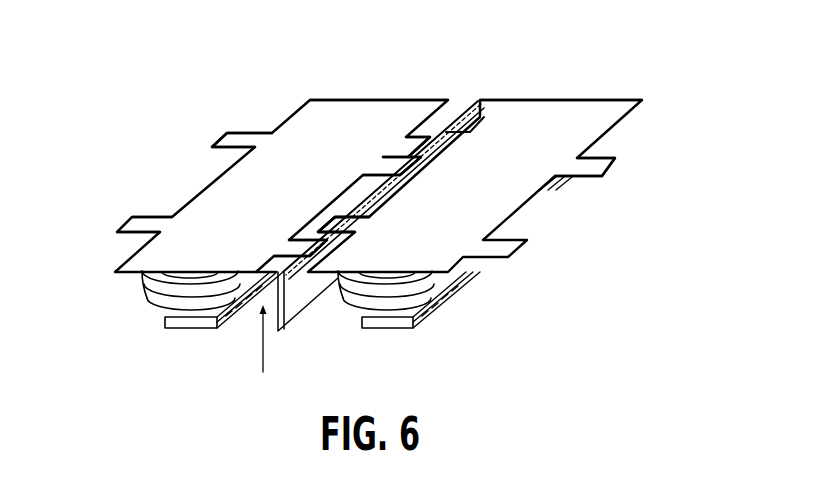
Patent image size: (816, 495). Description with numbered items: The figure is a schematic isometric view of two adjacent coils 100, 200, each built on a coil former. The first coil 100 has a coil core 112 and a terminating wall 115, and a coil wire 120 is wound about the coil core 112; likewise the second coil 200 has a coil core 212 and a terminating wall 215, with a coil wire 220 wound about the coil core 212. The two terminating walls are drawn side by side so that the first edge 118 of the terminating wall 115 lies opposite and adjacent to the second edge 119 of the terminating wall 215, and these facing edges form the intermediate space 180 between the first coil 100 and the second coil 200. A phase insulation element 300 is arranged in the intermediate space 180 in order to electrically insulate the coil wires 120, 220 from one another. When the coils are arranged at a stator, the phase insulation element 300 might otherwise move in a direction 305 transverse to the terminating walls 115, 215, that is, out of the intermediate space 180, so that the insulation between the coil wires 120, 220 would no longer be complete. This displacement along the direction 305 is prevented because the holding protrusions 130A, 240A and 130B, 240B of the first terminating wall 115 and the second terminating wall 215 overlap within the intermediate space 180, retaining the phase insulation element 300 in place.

The first coil 100 is at (295, 109).
The terminating wall 115 is at (330, 100).
The second edge 119 is at (230, 168).
The first edge 118 is at (350, 187).
The holding protrusion 130A is at (394, 157).
The holding protrusion 130B is at (283, 251).
The second coil 200 is at (651, 100).
The terminating wall 215 is at (601, 100).
The holding protrusion 240A is at (465, 133).
The holding protrusion 240B is at (351, 223).
The intermediate space 180 is at (458, 103).
The phase insulation element 300 is at (293, 310).
The direction 305 is at (262, 372).
The coil wire 120 is at (147, 291).
The coil core 112 is at (172, 331).
The coil wire 220 is at (433, 300).
The coil core 212 is at (392, 330).